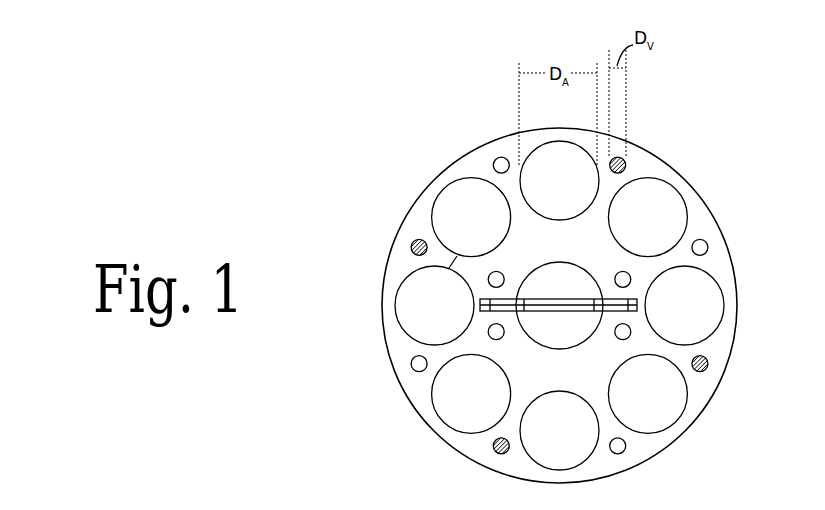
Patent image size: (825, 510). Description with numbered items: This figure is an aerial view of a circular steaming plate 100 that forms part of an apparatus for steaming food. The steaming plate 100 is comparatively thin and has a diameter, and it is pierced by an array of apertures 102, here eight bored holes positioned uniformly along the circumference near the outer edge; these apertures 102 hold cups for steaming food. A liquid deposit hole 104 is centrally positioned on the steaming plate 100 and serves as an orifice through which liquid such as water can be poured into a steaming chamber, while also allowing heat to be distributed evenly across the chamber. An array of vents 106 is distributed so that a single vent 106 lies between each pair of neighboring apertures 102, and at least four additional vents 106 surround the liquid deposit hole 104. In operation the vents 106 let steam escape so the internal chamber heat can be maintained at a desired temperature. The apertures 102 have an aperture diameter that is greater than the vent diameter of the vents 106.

The steaming plate 100 is at (668, 89).
The array of apertures 102 is at (663, 404).
The liquid deposit hole 104 is at (575, 333).
The array of vents 106 is at (560, 301).